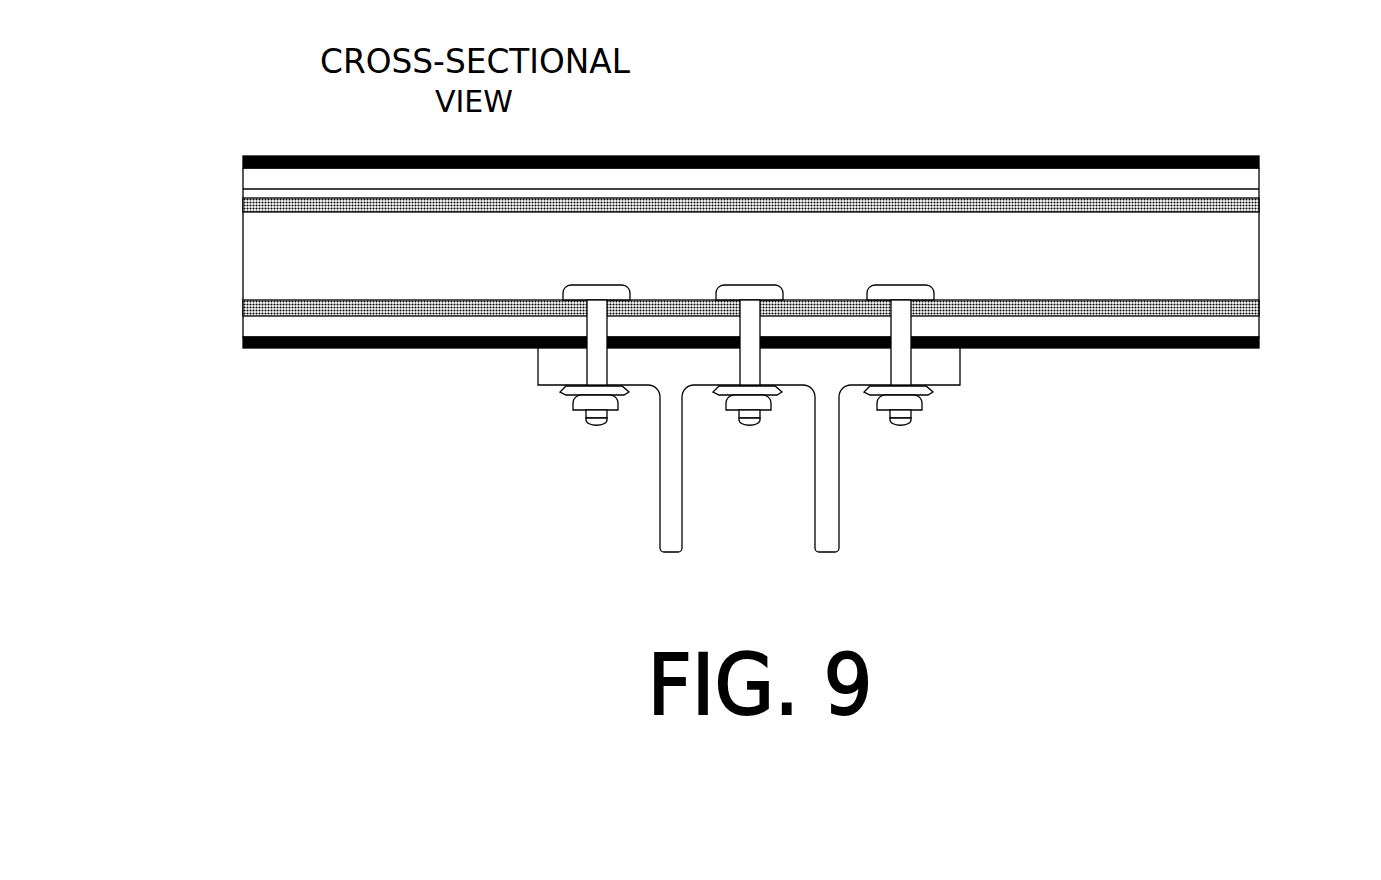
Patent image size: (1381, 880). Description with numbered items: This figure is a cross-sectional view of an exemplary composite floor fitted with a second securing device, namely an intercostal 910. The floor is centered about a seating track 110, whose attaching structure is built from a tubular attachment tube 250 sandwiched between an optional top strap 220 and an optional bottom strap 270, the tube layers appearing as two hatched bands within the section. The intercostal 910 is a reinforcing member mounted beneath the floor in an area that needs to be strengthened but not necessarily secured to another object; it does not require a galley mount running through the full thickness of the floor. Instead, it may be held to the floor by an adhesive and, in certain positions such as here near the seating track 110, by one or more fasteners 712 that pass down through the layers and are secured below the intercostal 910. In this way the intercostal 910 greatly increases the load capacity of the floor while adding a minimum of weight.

The seating track 110 is at (180, 257).
The top strap 220 is at (1265, 175).
The tubular attachment tube 250 is at (279, 216).
The bottom strap 270 is at (1266, 326).
The fastener 712 is at (597, 434).
The intercostal 910 is at (966, 368).